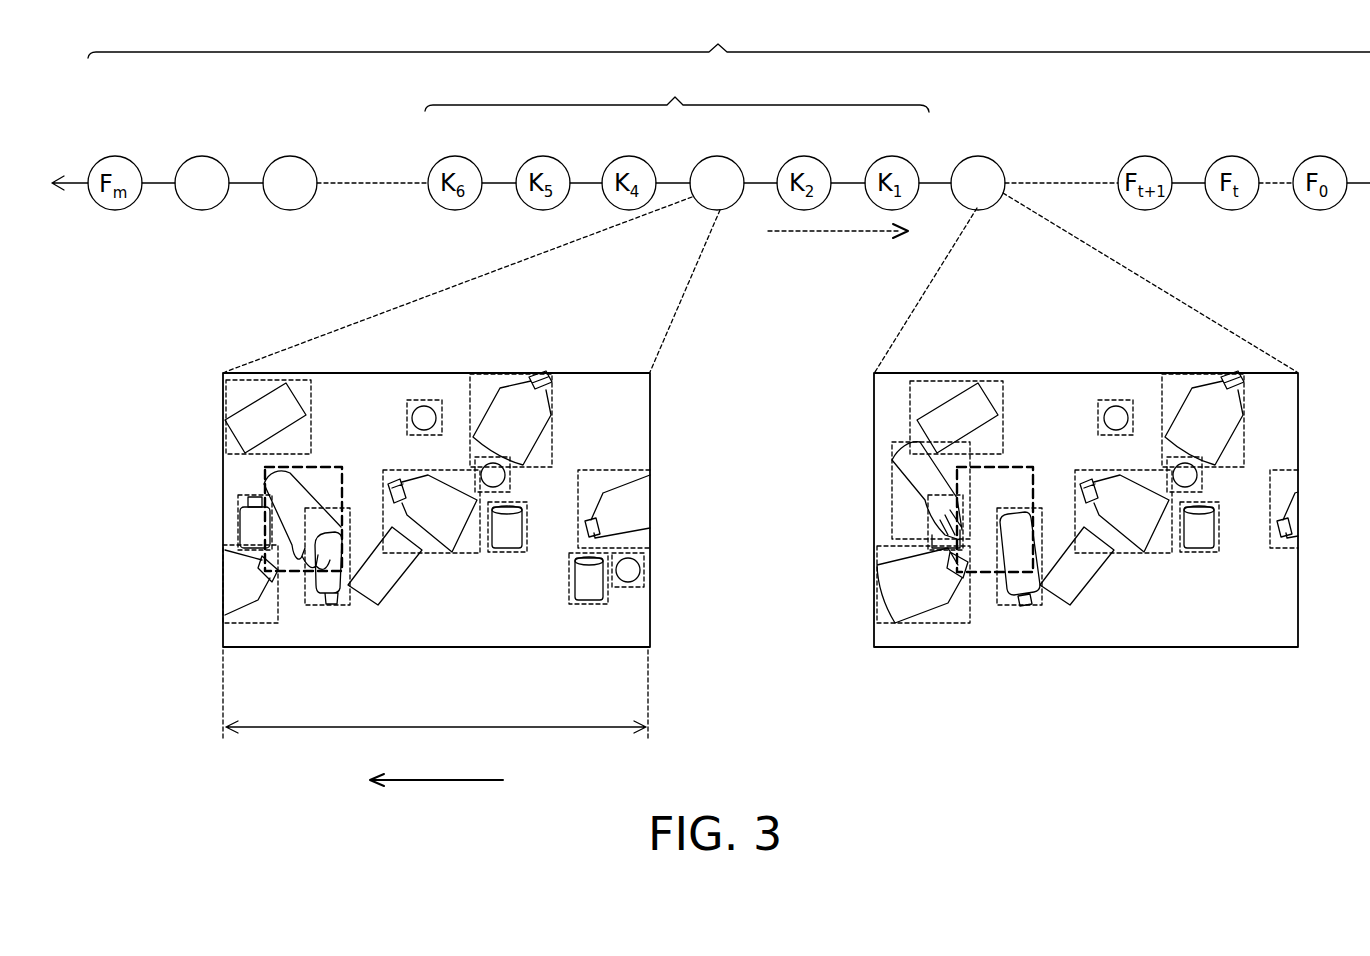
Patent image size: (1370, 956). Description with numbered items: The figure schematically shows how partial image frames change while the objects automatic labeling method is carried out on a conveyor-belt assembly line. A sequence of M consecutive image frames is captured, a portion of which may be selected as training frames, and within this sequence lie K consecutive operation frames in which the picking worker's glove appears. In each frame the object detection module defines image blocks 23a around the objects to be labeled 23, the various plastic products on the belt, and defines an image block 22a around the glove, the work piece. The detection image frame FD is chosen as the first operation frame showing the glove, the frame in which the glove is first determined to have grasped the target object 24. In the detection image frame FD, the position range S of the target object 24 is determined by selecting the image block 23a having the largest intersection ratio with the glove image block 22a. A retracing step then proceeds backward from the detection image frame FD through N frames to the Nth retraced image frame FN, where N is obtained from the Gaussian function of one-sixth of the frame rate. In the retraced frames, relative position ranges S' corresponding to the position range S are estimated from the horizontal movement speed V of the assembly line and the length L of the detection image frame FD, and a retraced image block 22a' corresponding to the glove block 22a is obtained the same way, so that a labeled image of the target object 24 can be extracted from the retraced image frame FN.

The image block of the work piece 22a is at (596, 570).
The retraced image block 22a' is at (889, 584).
The objects to be labeled 23 is at (632, 575).
The image blocks of the objects to be labeled 23a is at (465, 554).
The target object 24 is at (337, 582).
The position range of the target object S is at (303, 583).
The relative position ranges S' is at (995, 581).
The detection image frame FD is at (736, 144).
The Nth retraced image frame FN is at (998, 144).
The number of consecutive image frames M is at (729, 36).
The number of consecutive operation frames K is at (677, 89).
The number of retraced frames N is at (838, 244).
The length of the detection image frame L is at (435, 706).
The horizontal movement speed V is at (450, 782).